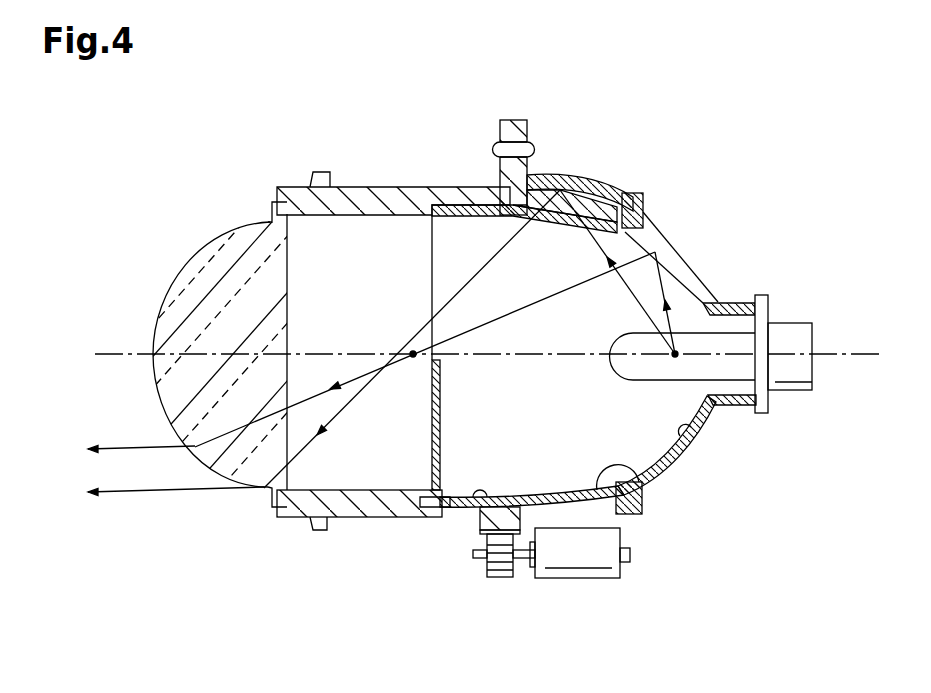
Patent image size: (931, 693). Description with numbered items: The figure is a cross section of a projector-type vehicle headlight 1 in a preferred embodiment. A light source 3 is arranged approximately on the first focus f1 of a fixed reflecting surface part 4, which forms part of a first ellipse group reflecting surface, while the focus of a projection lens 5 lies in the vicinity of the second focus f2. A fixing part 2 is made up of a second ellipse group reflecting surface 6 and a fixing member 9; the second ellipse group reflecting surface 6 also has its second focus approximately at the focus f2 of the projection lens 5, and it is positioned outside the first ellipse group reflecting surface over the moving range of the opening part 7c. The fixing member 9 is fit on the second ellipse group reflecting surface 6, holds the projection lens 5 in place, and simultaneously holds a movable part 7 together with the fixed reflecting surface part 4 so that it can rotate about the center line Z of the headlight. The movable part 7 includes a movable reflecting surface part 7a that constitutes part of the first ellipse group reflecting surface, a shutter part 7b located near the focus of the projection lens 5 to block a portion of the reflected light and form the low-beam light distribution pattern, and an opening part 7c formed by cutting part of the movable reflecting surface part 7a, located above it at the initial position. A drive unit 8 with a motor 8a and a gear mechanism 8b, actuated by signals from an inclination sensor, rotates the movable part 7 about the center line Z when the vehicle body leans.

The vehicle headlight 1 is at (720, 162).
The fixing part 2 is at (420, 165).
The light source 3 is at (790, 333).
The fixed reflecting surface part 4 is at (690, 438).
The projection lens 5 is at (200, 277).
The second ellipse group reflecting surface 6 is at (588, 196).
The movable part 7 is at (560, 397).
The movable reflecting surface part 7a is at (640, 490).
The shutter part 7b is at (442, 392).
The opening part 7c is at (577, 214).
The drive unit 8 is at (577, 587).
The motor 8a is at (612, 568).
The gear mechanism 8b is at (500, 579).
The fixing member 9 is at (350, 517).
The first focus f1 is at (677, 352).
The second focus f2 is at (412, 357).
The center line Z is at (474, 355).